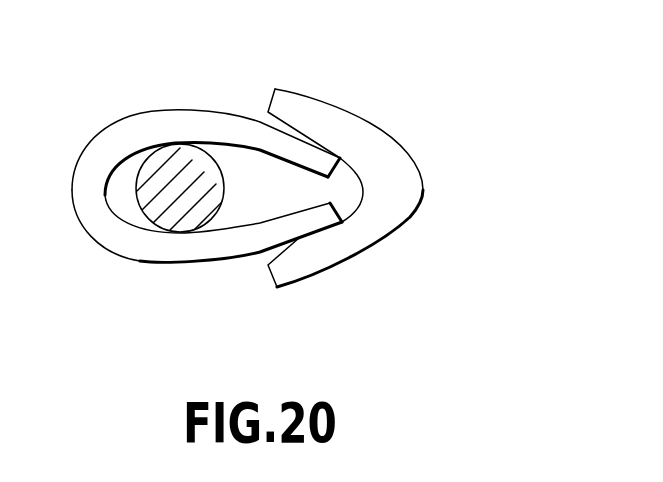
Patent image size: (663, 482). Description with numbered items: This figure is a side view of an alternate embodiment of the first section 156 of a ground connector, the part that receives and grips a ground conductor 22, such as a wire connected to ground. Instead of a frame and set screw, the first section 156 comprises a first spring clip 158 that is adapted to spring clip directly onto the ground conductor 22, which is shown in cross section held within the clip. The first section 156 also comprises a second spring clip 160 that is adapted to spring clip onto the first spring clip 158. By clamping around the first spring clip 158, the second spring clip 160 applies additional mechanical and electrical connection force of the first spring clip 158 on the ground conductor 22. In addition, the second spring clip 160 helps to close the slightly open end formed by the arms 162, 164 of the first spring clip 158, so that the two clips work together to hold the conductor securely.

The first section 156 is at (445, 47).
The first spring clip 158 is at (105, 245).
The second spring clip 160 is at (426, 190).
The arm 162 is at (297, 133).
The arm 164 is at (298, 240).
The ground conductor 22 is at (198, 143).